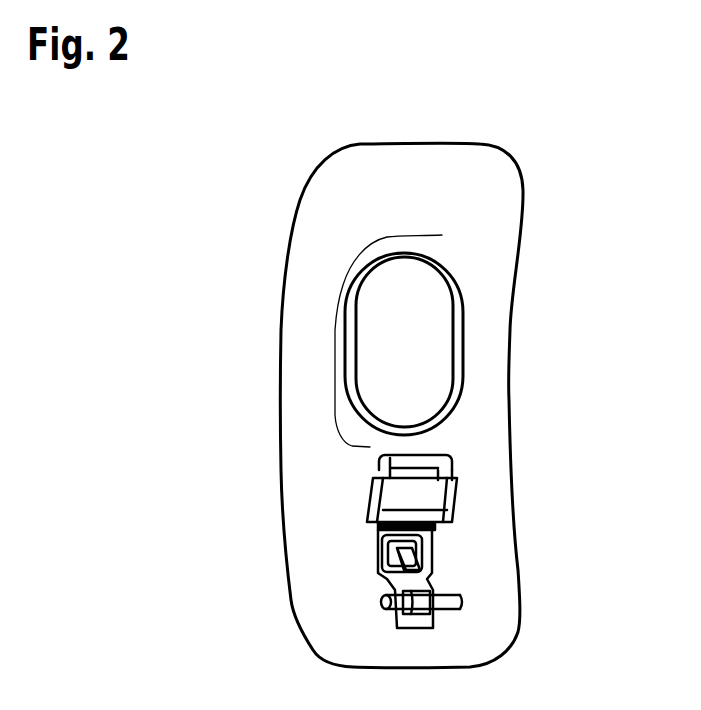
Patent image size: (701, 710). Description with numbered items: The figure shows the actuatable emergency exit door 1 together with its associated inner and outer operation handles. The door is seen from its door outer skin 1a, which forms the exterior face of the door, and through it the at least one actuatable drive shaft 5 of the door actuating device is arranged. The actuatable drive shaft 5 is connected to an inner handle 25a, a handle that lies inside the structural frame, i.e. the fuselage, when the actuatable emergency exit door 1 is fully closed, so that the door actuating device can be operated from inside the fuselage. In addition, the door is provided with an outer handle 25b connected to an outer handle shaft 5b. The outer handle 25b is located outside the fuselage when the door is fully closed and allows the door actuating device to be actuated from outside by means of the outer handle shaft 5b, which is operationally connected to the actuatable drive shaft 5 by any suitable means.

The actuatable emergency exit door 1 is at (216, 207).
The door outer skin 1a is at (487, 210).
The inner handle 25a is at (480, 511).
The outer handle 25b is at (362, 575).
The actuatable drive shaft 5 is at (437, 525).
The outer handle shaft 5b is at (450, 611).